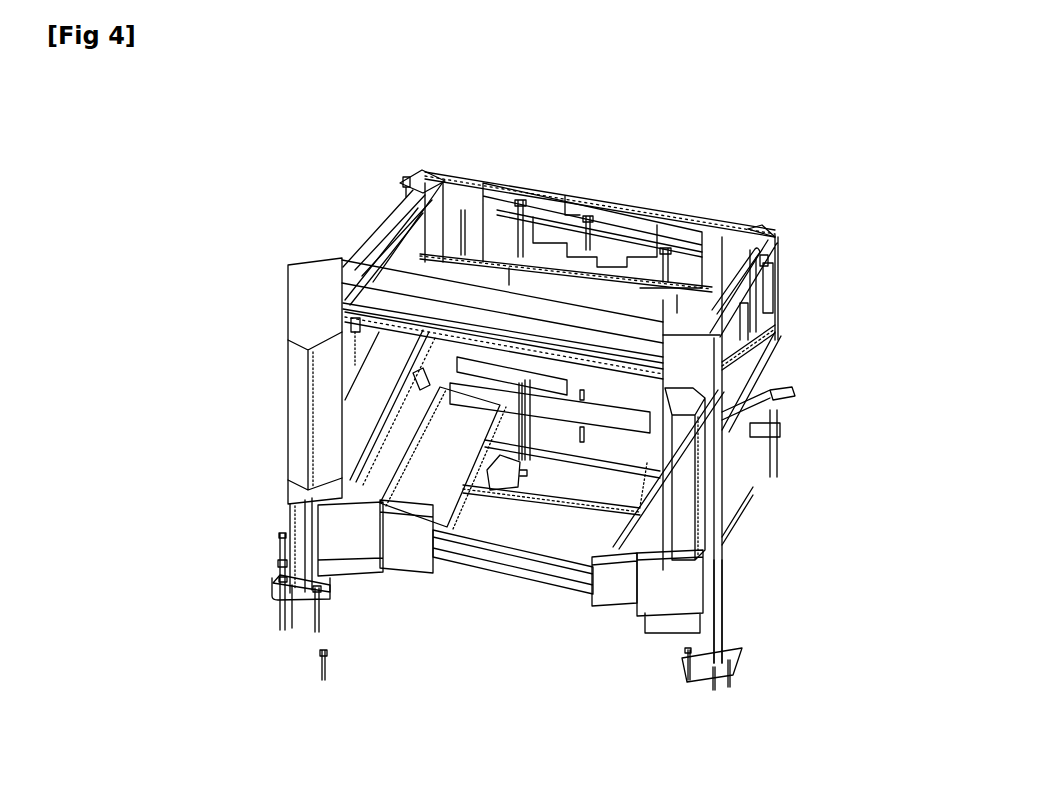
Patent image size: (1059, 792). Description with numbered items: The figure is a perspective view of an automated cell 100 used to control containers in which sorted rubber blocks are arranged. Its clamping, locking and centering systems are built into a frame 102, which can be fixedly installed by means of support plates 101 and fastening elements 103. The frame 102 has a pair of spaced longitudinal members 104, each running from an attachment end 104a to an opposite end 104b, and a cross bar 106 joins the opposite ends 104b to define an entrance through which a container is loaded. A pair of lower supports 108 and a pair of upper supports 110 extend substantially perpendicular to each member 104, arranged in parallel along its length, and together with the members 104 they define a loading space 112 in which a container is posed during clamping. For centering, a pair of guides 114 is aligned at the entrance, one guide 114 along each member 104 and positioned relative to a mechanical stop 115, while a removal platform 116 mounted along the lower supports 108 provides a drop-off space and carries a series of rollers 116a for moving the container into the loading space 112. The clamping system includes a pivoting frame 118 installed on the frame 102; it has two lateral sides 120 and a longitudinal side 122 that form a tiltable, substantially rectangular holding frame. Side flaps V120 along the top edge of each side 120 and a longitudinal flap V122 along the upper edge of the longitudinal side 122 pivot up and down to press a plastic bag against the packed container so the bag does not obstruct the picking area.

The automated cell 100 is at (643, 182).
The support plates 101 is at (298, 597).
The frame 102 is at (287, 293).
The fastening elements 103 is at (278, 600).
The longitudinal members 104 is at (305, 322).
The attachment end 104a is at (312, 598).
The opposite end 104b is at (298, 277).
The cross bar 106 is at (362, 277).
The lower supports 108 is at (790, 470).
The upper supports 110 is at (357, 393).
The loading space 112 is at (517, 393).
The guides 114 is at (298, 388).
The mechanical stop 115 is at (337, 527).
The removal platform 116 is at (438, 487).
The rollers 116a is at (410, 513).
The pivoting frame 118 is at (760, 234).
The lateral sides 120 is at (400, 250).
The longitudinal side 122 is at (688, 260).
The side flaps V120 is at (415, 198).
The longitudinal flap V122 is at (572, 207).